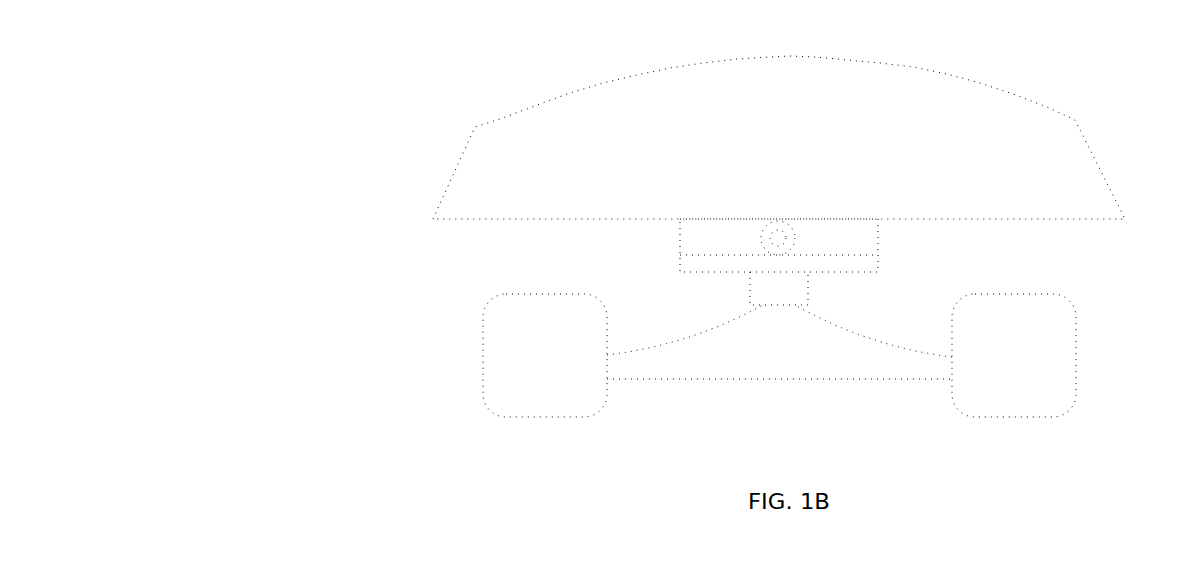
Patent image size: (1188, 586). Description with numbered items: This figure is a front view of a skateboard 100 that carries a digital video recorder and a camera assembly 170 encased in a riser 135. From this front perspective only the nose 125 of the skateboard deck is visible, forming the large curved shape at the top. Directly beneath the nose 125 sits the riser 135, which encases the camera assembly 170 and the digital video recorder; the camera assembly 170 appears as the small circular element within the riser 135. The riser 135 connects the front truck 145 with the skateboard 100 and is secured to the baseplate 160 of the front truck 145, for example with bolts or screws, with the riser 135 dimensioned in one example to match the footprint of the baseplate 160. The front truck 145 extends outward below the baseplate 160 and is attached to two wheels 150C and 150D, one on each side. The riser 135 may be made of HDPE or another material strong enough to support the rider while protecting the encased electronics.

The skateboard 100 is at (806, 44).
The nose 125 is at (498, 163).
The riser 135 is at (712, 232).
The baseplate 160 is at (780, 268).
The camera assembly 170 is at (780, 238).
The front truck 145 is at (767, 358).
The wheel 150C is at (518, 337).
The wheel 150D is at (1052, 351).